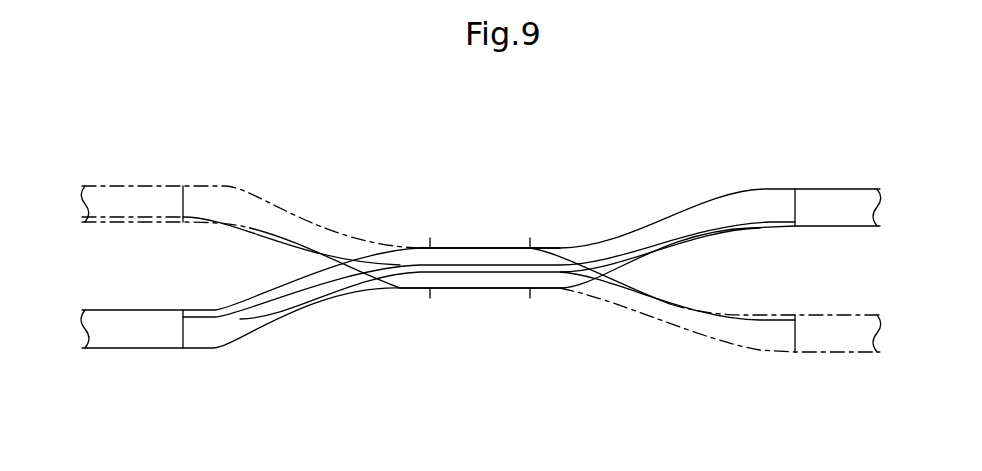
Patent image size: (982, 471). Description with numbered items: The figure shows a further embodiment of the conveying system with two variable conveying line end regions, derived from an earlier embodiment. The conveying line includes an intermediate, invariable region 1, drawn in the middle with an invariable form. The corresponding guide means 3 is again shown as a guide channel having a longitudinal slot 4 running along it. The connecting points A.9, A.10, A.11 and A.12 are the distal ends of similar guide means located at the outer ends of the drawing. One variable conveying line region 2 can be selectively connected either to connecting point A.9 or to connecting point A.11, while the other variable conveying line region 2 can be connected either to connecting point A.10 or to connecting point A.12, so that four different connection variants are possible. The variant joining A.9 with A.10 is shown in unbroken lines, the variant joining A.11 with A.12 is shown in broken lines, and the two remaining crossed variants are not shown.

The crossing portion 1 is at (505, 300).
The variable conveying line region 2 is at (690, 194).
The guide means 3 is at (485, 257).
The longitudinal slot 4 is at (560, 275).
The connecting point A.9 is at (185, 354).
The connecting point A.10 is at (800, 179).
The connecting point A.11 is at (183, 180).
The connecting point A.12 is at (792, 366).